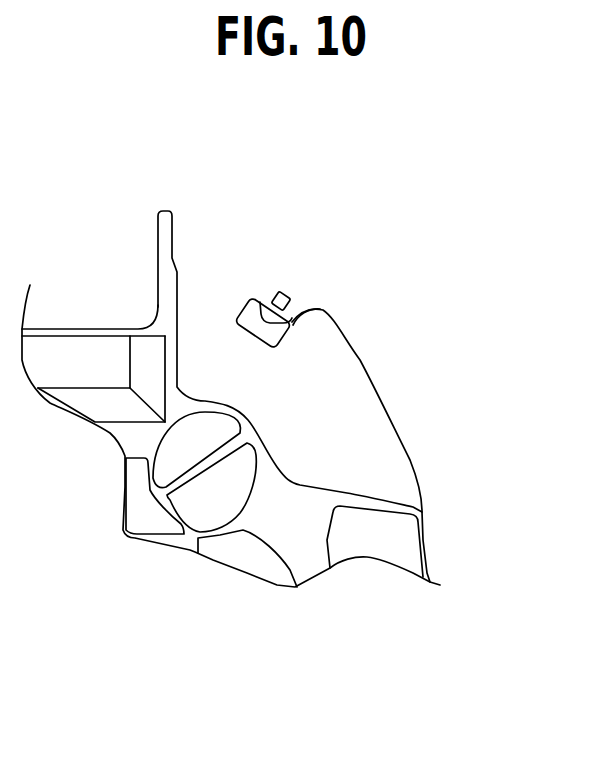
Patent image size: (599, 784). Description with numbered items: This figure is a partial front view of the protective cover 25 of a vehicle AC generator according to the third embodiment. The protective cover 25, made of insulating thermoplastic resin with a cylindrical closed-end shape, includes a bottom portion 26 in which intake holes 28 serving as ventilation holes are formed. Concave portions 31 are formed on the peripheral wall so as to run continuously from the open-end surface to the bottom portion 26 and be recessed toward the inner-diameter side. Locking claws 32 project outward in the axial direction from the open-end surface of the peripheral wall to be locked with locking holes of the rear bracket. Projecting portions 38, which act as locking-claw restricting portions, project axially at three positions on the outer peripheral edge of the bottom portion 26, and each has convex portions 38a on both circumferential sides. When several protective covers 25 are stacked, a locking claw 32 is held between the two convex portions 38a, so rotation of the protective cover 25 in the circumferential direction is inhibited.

The protective cover 25 is at (443, 538).
The bottom portion 26 is at (363, 460).
The intake holes 28 is at (208, 503).
The concave portions 31 is at (302, 312).
The locking claws 32 is at (283, 293).
The projecting portions 38 is at (270, 338).
The convex portions 38a is at (254, 292).